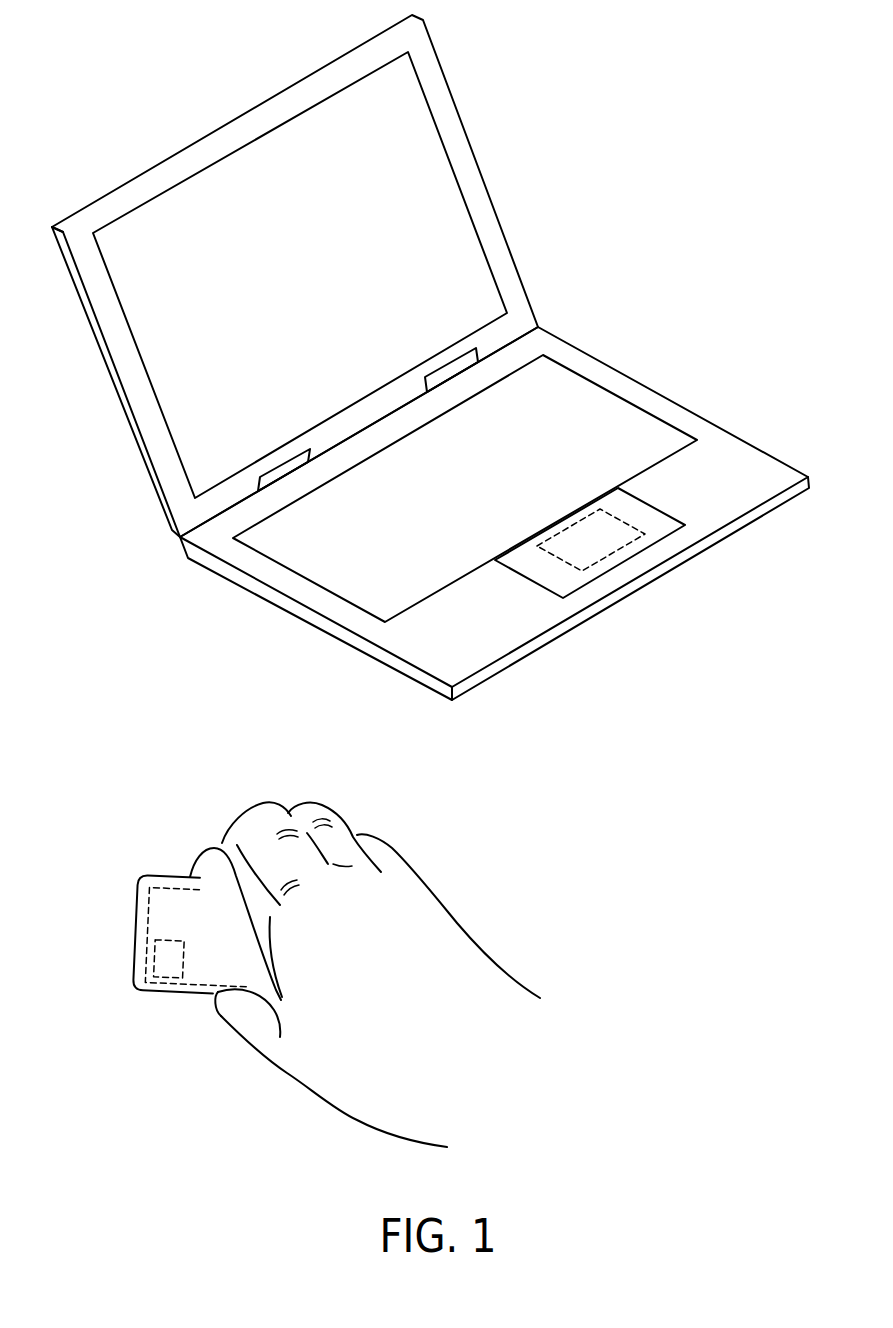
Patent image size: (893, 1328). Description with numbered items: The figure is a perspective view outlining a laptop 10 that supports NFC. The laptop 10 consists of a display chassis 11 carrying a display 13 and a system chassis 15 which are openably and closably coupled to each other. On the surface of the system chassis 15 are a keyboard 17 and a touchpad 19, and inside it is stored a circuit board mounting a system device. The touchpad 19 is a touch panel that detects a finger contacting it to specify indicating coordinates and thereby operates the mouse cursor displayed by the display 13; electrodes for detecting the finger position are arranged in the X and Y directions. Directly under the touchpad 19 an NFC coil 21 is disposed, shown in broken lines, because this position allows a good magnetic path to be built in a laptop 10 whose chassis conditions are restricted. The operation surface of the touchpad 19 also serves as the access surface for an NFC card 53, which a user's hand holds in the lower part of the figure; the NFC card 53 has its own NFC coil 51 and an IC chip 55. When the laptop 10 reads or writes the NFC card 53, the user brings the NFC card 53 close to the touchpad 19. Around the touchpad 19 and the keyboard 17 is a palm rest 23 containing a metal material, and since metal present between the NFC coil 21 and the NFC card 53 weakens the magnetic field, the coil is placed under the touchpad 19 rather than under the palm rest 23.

The laptop 10 is at (563, 193).
The display chassis 11 is at (478, 157).
The display 13 is at (430, 110).
The system chassis 15 is at (598, 356).
The keyboard 17 is at (640, 407).
The touchpad 19 is at (665, 514).
The NFC coil 21 is at (627, 550).
The palm rest 23 is at (745, 472).
The NFC coil 51 is at (148, 935).
The NFC card 53 is at (152, 873).
The IC chip 55 is at (170, 940).